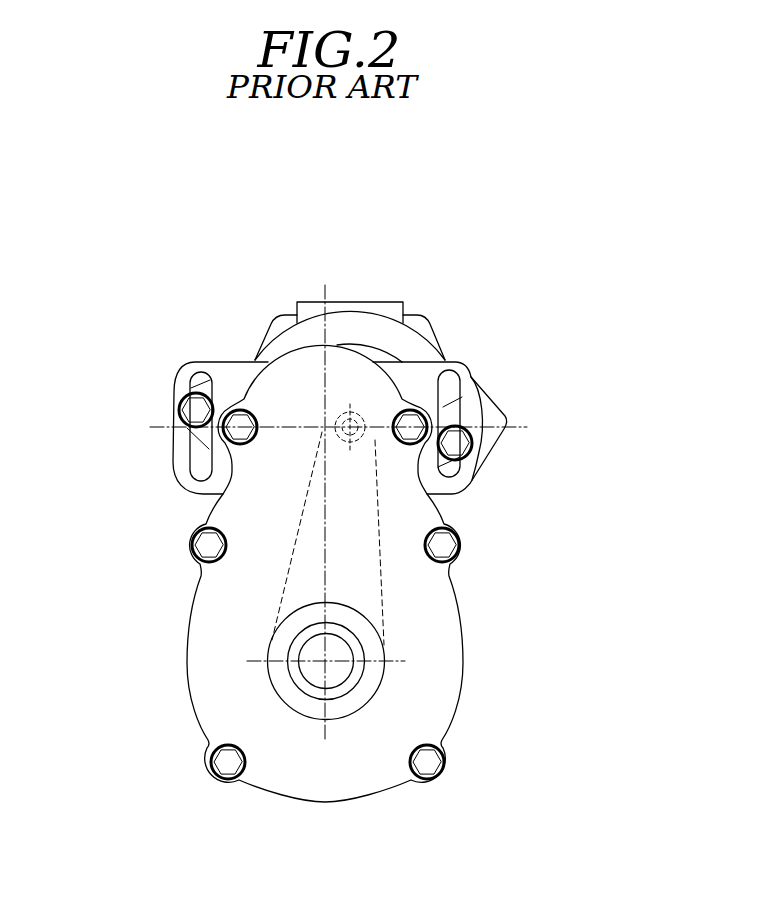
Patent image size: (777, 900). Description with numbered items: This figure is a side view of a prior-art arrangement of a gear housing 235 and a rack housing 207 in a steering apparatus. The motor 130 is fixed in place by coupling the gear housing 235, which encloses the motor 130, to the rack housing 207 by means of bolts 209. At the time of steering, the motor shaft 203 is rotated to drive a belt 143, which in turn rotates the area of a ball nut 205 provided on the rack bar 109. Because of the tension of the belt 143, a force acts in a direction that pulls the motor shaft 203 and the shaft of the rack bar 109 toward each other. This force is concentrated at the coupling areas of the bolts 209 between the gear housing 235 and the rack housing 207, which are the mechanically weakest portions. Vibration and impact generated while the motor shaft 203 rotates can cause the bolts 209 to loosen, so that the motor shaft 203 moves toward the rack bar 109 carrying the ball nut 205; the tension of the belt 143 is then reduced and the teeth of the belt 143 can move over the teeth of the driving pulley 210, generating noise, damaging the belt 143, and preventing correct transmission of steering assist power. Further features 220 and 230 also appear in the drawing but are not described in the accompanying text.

The rack bar 109 is at (304, 652).
The motor 130 is at (417, 321).
The belt 143 is at (380, 593).
The motor shaft 203 is at (350, 410).
The ball nut 205 is at (338, 696).
The rack housing 207 is at (453, 653).
The bolt 209 is at (442, 545).
The driving pulley 210 is at (215, 497).
The bearing portion 220 is at (380, 673).
The mounting bracket 230 is at (196, 410).
The gear housing 235 is at (350, 318).